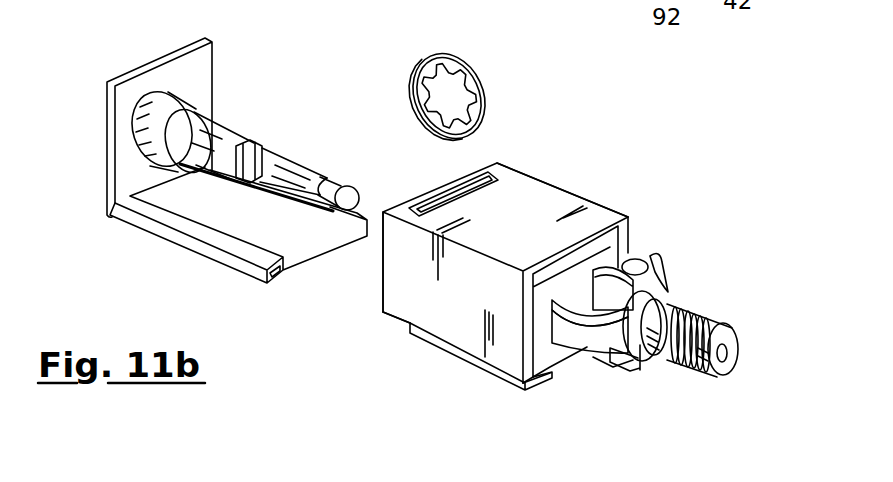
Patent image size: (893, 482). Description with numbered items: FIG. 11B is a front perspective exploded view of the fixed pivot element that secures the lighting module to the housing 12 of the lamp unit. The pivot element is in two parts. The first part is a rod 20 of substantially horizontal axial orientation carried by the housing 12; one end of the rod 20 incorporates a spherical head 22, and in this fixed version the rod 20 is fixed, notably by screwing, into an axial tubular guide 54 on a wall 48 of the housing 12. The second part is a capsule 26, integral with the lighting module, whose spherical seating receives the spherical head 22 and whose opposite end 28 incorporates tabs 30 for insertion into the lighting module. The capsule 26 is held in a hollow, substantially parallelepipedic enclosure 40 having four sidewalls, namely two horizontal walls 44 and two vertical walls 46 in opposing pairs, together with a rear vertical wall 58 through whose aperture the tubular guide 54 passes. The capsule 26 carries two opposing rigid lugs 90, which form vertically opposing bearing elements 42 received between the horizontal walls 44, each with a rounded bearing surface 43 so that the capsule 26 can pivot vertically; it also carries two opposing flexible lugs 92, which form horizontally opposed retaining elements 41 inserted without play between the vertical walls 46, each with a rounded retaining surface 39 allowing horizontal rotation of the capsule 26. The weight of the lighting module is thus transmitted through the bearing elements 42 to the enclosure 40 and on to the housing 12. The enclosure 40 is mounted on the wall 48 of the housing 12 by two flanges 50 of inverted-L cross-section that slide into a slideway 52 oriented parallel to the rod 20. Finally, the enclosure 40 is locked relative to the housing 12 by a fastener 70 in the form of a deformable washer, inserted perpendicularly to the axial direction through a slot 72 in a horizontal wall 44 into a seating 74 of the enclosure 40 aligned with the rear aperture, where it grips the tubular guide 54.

The housing 12 is at (208, 60).
The rod 20 is at (291, 154).
The spherical head 22 is at (353, 188).
The capsule 26 is at (673, 290).
The opposite end 28 is at (697, 366).
The tabs 30 is at (698, 320).
The retaining surface 39 is at (551, 306).
The enclosure 40 is at (547, 212).
The retaining elements 41 is at (584, 348).
The bearing elements 42 is at (656, 277).
The bearing surface 43 is at (639, 258).
The horizontal walls 44 is at (588, 248).
The vertical walls 46 is at (452, 317).
The wall 48 is at (188, 227).
The flanges 50 is at (438, 340).
The slideway 52 is at (278, 279).
The tubular guide 54 is at (222, 140).
The rear vertical wall 58 is at (382, 286).
The deformable washer 70 is at (480, 79).
The slot 72 is at (472, 176).
The seating 74 is at (447, 197).
The rigid lugs 90 is at (625, 363).
The flexible lugs 92 is at (527, 334).